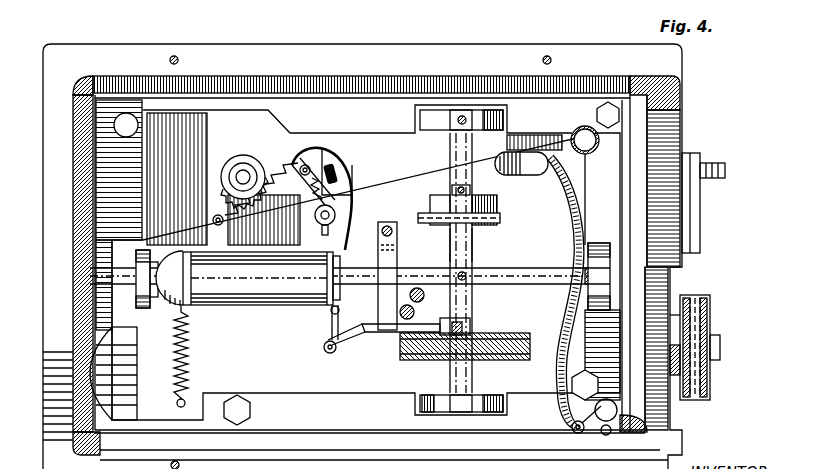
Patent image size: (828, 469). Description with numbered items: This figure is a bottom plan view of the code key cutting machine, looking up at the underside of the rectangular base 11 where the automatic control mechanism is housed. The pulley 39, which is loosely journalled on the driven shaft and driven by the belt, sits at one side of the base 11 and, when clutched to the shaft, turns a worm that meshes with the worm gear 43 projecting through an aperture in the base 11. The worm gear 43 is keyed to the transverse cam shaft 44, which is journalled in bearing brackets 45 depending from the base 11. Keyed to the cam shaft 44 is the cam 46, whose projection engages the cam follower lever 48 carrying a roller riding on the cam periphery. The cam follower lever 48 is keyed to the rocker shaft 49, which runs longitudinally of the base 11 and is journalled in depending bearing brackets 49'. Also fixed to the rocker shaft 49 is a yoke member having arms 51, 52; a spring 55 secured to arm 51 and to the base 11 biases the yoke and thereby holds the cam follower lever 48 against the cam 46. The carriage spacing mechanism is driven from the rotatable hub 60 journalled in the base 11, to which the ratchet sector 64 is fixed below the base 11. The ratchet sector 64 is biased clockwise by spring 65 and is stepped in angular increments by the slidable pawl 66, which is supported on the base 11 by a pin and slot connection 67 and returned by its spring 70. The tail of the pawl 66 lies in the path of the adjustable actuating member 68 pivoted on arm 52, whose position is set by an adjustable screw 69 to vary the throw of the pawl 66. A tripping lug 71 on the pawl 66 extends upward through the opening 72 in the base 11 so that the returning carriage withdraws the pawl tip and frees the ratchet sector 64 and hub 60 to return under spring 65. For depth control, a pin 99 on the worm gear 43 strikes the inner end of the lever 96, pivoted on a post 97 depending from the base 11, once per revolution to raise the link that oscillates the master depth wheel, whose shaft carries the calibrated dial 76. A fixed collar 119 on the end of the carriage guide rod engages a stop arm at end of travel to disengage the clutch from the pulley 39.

The base 11 is at (368, 62).
The pulley 39 is at (712, 313).
The worm gear 43 is at (505, 333).
The cam shaft 44 is at (453, 160).
The bearing brackets 45 is at (489, 130).
The cam 46 is at (490, 207).
The cam follower lever 48 is at (470, 250).
The rocker shaft 49 is at (345, 260).
The bearing brackets 49' is at (375, 258).
The arm 51 is at (175, 256).
The arm 52 is at (338, 272).
The spring 55 is at (190, 356).
The hub 60 is at (240, 170).
The ratchet sector 64 is at (268, 150).
The spring 65 is at (225, 201).
The pawl 66 is at (345, 235).
The pin and slot connection 67 is at (340, 205).
The actuating member 68 is at (330, 264).
The adjustable screw 69 is at (331, 315).
The spring 70 is at (350, 180).
The tripping lug 71 is at (348, 165).
The opening 72 is at (352, 190).
The calibrated dial 76 is at (135, 362).
The lever 96 is at (352, 343).
The post 97 is at (370, 324).
The pin 99 is at (440, 328).
The fixed collar 119 is at (702, 245).